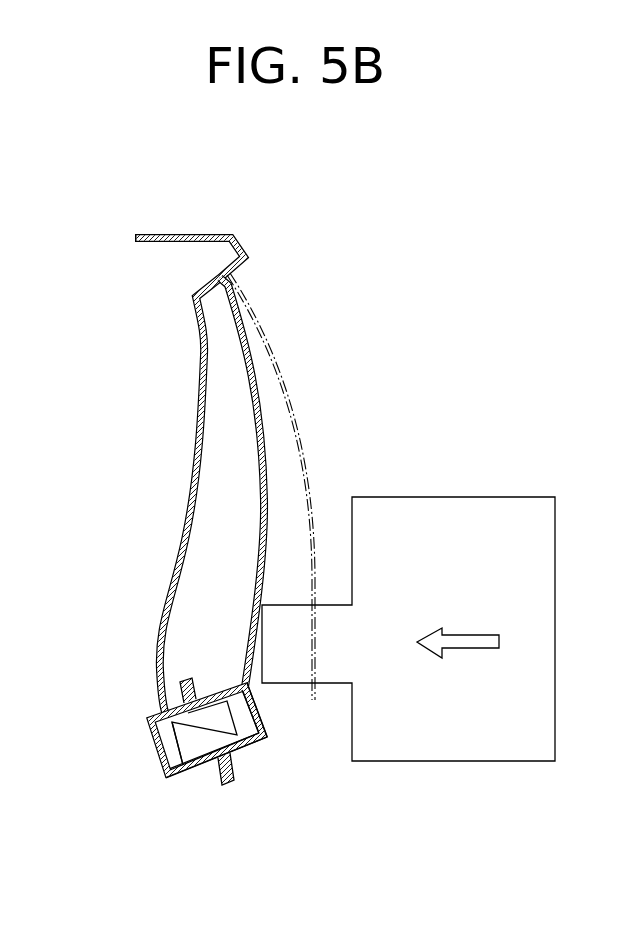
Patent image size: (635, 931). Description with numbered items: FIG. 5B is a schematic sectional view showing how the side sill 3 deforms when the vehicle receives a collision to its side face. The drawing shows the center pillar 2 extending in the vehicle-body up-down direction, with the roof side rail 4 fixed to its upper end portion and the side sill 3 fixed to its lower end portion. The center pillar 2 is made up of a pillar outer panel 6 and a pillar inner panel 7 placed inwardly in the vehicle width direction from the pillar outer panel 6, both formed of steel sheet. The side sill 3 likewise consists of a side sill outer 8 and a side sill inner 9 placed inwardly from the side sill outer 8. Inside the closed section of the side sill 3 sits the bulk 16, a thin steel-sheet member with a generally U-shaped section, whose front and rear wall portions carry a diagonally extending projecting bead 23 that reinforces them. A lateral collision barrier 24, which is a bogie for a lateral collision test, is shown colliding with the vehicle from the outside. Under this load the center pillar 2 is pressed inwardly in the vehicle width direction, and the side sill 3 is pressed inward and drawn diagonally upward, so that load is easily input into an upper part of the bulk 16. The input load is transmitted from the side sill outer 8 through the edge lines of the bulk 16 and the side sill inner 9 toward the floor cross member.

The center pillar 2 is at (258, 346).
The side sill 3 is at (272, 721).
The roof side rail 4 is at (163, 233).
The pillar outer panel 6 is at (268, 493).
The pillar inner panel 7 is at (193, 483).
The side sill outer 8 is at (250, 750).
The side sill inner 9 is at (193, 768).
The bulk 16 is at (148, 727).
The bead 23 is at (220, 735).
The lateral collision barrier 24 is at (479, 508).